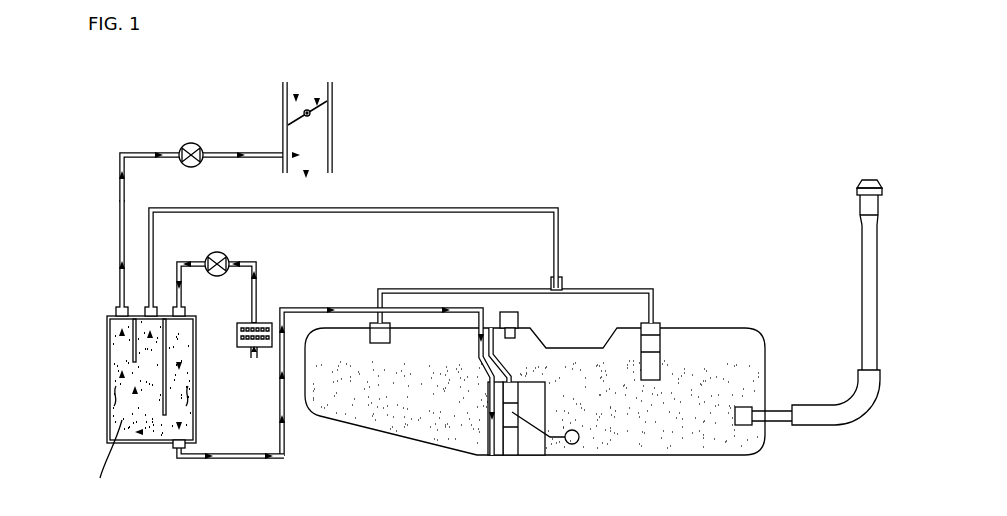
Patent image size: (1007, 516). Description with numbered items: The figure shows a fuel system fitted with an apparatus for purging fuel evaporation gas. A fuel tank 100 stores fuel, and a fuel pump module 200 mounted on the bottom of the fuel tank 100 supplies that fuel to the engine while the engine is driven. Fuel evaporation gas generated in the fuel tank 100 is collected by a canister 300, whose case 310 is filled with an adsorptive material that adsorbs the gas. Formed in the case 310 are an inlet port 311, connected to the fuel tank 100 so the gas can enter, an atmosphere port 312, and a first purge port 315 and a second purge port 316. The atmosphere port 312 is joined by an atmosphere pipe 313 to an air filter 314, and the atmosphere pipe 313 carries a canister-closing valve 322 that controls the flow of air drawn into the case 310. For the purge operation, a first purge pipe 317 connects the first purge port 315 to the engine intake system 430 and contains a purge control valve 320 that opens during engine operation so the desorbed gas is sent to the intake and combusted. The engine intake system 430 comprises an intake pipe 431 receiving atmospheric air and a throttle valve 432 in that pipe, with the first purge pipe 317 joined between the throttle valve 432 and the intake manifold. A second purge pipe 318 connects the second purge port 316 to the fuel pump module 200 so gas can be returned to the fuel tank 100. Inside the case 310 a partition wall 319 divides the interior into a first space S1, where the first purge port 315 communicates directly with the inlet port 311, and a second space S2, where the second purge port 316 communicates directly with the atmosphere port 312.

The fuel tank 100 is at (740, 326).
The fuel pump module 200 is at (489, 440).
The canister 300 is at (137, 407).
The case 310 is at (107, 361).
The inlet port 311 is at (153, 304).
The atmosphere port 312 is at (197, 312).
The atmosphere pipe 313 is at (256, 261).
The air filter 314 is at (263, 322).
The first purge port 315 is at (118, 306).
The second purge port 316 is at (188, 444).
The first purge pipe 317 is at (119, 152).
The second purge pipe 318 is at (331, 307).
The partition wall 319 is at (160, 416).
The purge control valve 320 is at (191, 143).
The canister-closing valve 322 is at (217, 251).
The engine intake system 430 is at (364, 127).
The intake pipe 431 is at (332, 137).
The throttle valve 432 is at (328, 102).
The first space S1 is at (117, 400).
The second space S2 is at (190, 397).